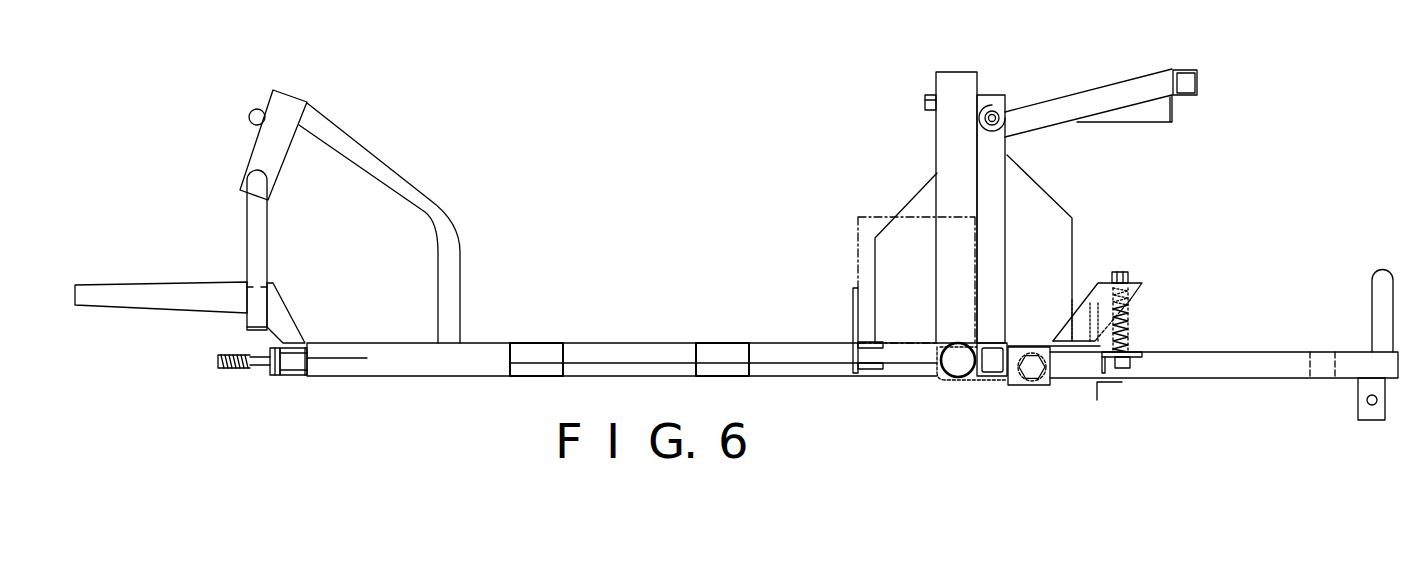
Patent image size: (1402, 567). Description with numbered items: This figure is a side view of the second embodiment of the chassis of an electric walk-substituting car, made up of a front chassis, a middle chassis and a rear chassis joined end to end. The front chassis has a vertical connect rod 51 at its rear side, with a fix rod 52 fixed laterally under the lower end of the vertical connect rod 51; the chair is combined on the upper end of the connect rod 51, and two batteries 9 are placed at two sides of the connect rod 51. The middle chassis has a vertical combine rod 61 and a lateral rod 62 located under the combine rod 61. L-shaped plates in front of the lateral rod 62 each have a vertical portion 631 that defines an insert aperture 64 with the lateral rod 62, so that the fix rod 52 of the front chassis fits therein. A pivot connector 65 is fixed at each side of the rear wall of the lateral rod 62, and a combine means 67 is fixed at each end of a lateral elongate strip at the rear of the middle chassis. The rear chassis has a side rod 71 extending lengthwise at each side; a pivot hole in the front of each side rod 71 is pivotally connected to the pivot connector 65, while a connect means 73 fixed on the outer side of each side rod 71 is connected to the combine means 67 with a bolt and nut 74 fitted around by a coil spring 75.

The batteries 9 is at (860, 216).
The vertical connect rod 51 is at (952, 88).
The fix rod 52 is at (945, 381).
The vertical combine rod 61 is at (993, 150).
The lateral rod 62 is at (992, 377).
The vertical portion 631 is at (927, 375).
The insert aperture 64 is at (972, 374).
The pivot connector 65 is at (1023, 386).
The combine means 67 is at (1098, 282).
The side rod 71 is at (1065, 368).
The connect means 73 is at (1135, 357).
The bolt and nut 74 is at (1127, 274).
The coil spring 75 is at (1128, 336).